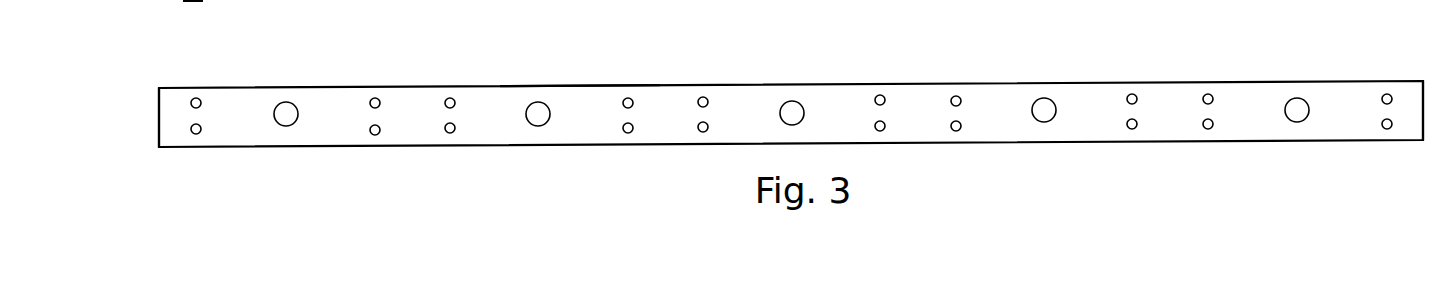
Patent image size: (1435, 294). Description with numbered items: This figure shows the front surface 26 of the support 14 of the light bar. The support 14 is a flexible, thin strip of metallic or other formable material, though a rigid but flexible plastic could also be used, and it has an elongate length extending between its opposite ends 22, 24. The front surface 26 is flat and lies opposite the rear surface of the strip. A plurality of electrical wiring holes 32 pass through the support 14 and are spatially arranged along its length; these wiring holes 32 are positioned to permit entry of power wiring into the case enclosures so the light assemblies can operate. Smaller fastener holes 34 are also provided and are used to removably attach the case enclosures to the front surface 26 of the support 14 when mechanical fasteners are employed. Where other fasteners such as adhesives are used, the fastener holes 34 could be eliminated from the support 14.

The support 14 is at (932, 90).
The end of the support 22 is at (1423, 120).
The end of the support 24 is at (159, 128).
The front surface 26 is at (577, 92).
The electrical wiring holes 32 is at (286, 117).
The fastener holes 34 is at (197, 102).